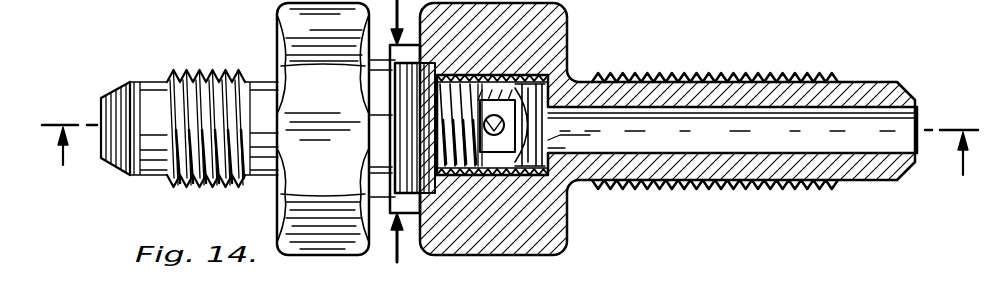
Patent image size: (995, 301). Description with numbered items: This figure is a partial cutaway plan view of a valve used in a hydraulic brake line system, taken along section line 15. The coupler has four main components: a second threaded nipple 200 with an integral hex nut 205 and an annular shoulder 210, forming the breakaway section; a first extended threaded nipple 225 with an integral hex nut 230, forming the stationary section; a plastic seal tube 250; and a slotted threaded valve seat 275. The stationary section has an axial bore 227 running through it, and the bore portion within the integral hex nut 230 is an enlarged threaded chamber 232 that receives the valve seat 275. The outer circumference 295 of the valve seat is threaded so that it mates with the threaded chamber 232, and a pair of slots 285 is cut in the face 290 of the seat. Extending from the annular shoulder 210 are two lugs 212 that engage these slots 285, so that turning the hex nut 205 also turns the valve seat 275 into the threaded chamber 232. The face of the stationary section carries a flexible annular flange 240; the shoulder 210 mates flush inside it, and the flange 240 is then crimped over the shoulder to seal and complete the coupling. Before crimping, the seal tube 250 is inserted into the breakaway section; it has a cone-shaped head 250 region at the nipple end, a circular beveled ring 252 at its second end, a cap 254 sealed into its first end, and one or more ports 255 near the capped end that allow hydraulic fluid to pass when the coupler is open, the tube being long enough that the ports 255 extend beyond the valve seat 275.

The section line 15- 15 is at (510, 167).
The second threaded nipple 200 is at (194, 70).
The integral hex nut 205 is at (290, 31).
The annular shoulder 210 is at (500, 86).
The lugs 212 is at (432, 128).
The first extended threaded nipple 225 is at (720, 76).
The axial bore 227 is at (834, 146).
The integral hex nut 230 is at (530, 160).
The threaded chamber 232 is at (545, 80).
The annular flange 240 is at (392, 45).
The plastic seal tube 250 is at (115, 141).
The circular beveled ring 252 is at (125, 88).
The cap 254 is at (566, 180).
The ports 255 is at (560, 142).
The slotted threaded valve seat 275 is at (500, 66).
The slots 285 is at (567, 24).
The face 290 is at (478, 112).
The outer circumference 295 is at (503, 135).